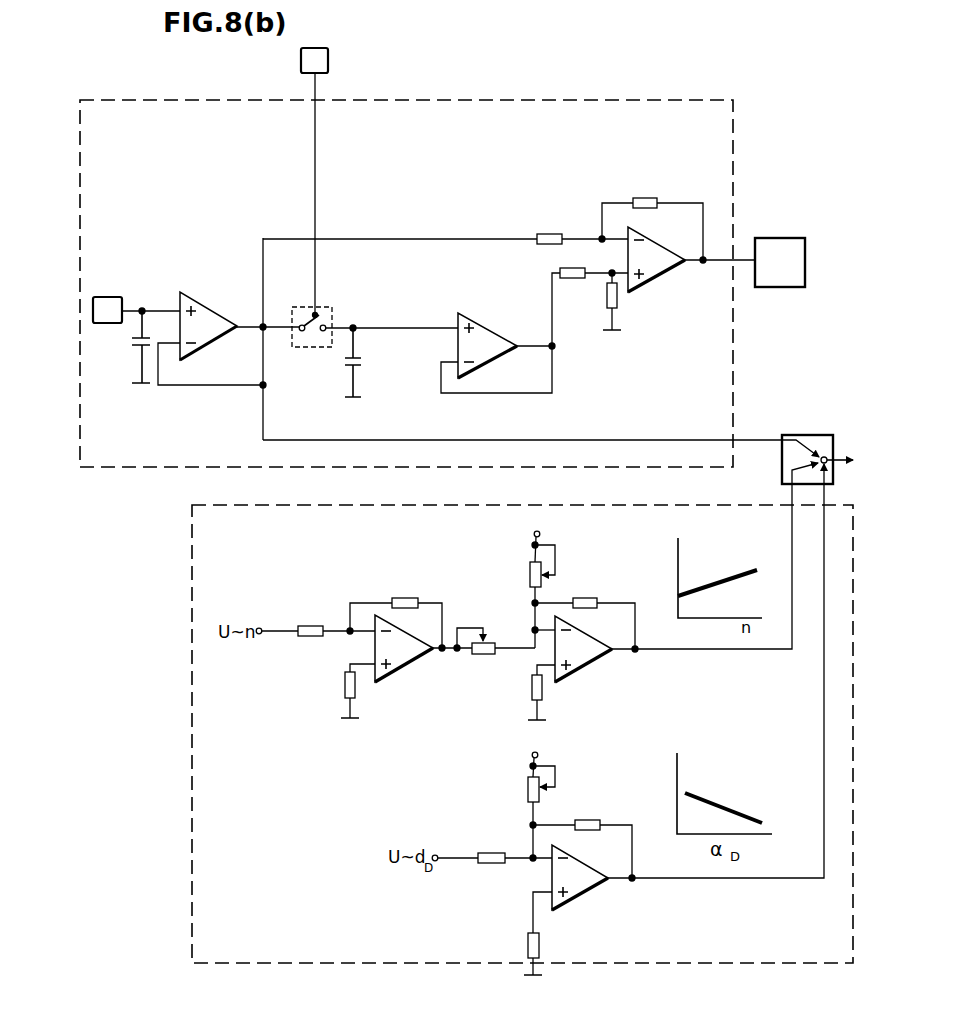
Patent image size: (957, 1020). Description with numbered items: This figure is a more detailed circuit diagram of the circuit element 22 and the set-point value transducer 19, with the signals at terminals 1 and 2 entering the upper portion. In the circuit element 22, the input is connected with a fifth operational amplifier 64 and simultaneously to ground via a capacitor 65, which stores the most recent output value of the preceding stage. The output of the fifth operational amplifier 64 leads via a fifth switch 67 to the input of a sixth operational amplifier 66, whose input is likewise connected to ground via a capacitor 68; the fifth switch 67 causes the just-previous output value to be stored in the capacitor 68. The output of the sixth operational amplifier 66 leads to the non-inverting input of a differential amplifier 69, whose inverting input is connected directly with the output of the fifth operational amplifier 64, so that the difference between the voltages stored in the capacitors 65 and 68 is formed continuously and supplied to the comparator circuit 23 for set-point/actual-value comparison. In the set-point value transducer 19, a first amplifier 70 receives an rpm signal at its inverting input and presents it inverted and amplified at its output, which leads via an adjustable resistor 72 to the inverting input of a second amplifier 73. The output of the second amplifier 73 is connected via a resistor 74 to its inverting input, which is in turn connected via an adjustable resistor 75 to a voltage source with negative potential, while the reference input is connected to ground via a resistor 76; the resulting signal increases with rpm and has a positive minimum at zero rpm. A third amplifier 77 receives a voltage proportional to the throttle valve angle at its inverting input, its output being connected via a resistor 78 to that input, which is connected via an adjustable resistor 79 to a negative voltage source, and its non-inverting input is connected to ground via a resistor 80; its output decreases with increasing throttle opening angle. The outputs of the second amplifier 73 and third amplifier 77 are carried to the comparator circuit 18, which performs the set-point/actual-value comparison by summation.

The control input terminal 1 is at (314, 183).
The signal input terminal 2 is at (136, 310).
The comparator circuit 18 is at (812, 435).
The set-point value transducer 19 is at (190, 815).
The circuit element 22 is at (514, 102).
The comparator circuit 23 is at (780, 288).
The fifth operational amplifier 64 is at (202, 305).
The capacitor 65 is at (135, 348).
The sixth operational amplifier 66 is at (487, 336).
The fifth switch 67 is at (311, 349).
The capacitor 68 is at (362, 367).
The differential amplifier 69 is at (656, 275).
The first amplifier 70 is at (403, 664).
The adjustable resistor 72 is at (484, 657).
The second amplifier 73 is at (588, 672).
The resistor 74 is at (587, 598).
The adjustable resistor 75 is at (529, 578).
The resistor 76 is at (531, 692).
The third amplifier 77 is at (586, 889).
The resistor 78 is at (587, 820).
The adjustable resistor 79 is at (527, 790).
The resistor 80 is at (527, 939).